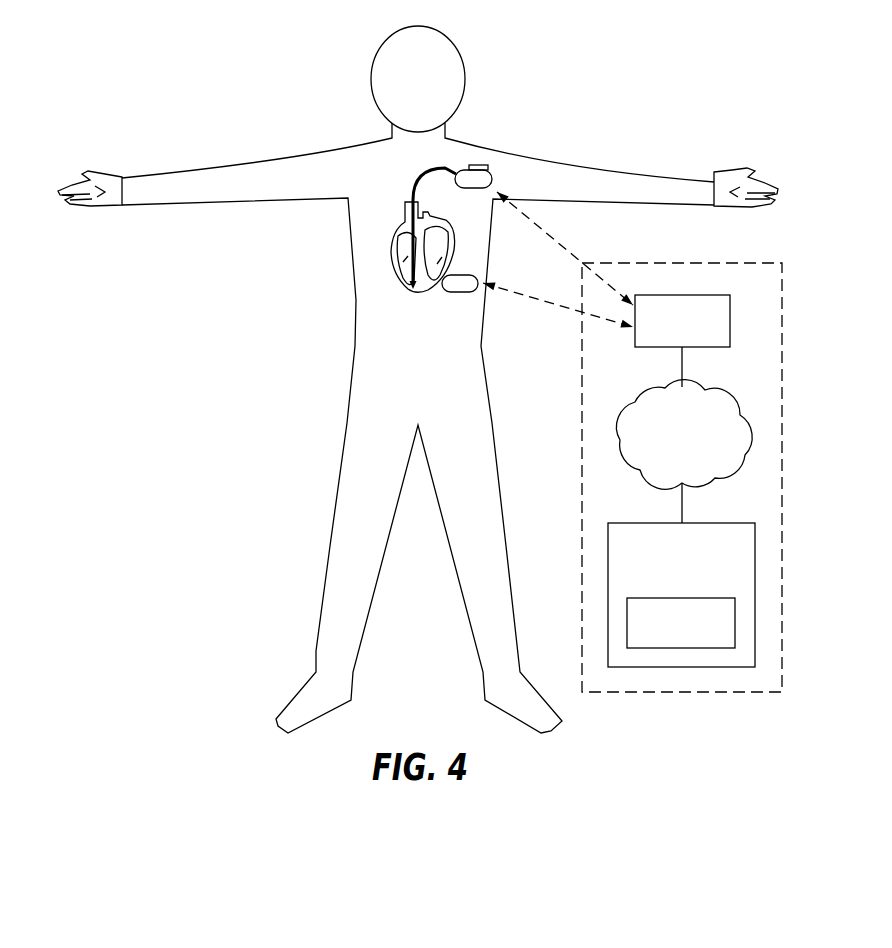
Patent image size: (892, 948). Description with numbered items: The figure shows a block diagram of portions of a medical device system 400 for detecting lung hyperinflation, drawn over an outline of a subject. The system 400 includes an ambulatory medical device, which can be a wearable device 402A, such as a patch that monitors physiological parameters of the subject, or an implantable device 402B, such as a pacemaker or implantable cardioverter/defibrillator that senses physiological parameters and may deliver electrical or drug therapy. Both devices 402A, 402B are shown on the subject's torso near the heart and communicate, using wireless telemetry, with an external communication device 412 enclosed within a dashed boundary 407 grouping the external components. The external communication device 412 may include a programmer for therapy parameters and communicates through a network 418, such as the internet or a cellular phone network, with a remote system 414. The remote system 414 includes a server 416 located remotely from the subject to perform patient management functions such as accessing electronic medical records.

The medical device system 400 is at (238, 54).
The wearable device 402A is at (457, 293).
The implantable device 402B is at (471, 166).
The external system 407 is at (684, 263).
The external communication device 412 is at (684, 295).
The network 418 is at (722, 398).
The remote system 414 is at (705, 523).
The server 416 is at (684, 598).